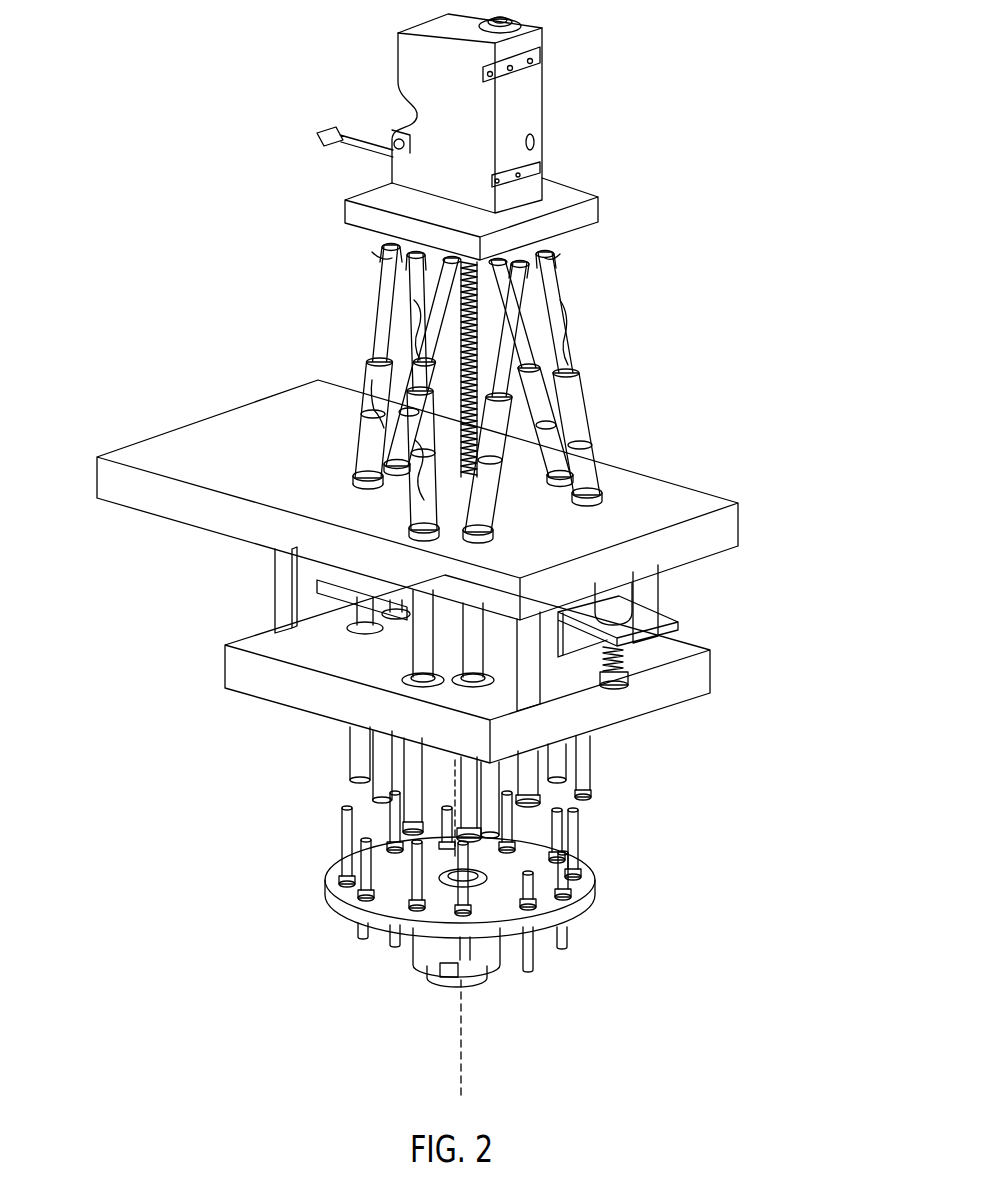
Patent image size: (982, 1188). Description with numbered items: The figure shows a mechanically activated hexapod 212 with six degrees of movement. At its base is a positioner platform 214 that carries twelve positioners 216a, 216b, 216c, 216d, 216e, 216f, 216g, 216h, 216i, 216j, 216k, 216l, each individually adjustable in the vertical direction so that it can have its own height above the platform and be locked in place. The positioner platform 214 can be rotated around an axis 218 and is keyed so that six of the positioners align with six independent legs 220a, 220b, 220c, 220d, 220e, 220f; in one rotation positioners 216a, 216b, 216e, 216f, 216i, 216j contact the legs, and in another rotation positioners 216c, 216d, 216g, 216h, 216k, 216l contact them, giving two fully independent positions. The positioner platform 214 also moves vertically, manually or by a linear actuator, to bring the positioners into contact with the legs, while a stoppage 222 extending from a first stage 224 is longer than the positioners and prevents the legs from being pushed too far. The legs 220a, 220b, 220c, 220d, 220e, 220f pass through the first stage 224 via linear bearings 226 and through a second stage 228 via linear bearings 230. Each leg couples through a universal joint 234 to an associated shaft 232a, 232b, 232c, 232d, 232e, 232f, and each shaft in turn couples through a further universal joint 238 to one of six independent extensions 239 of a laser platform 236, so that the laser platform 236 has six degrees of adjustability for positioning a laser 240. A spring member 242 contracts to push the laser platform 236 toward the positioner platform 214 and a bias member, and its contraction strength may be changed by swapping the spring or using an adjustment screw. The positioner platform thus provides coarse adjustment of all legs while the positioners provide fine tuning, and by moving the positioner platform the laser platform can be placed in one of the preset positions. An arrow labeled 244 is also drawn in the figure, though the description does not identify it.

The mechanically activated hexapod 212 is at (158, 70).
The positioner platform 214 is at (590, 890).
The positioner 216a is at (416, 908).
The positioner 216b is at (468, 905).
The positioner 216c is at (532, 905).
The positioner 216d is at (568, 895).
The positioner 216e is at (578, 860).
The positioner 216f is at (585, 835).
The positioner 216g is at (582, 818).
The positioner 216h is at (445, 820).
The positioner 216i is at (388, 920).
The positioner 216j is at (343, 822).
The positioner 216k is at (343, 842).
The positioner 216l is at (333, 906).
The axis 218 is at (462, 1073).
The leg 220a is at (410, 832).
The leg 220b is at (490, 905).
The leg 220c is at (583, 771).
The leg 220d is at (562, 746).
The leg 220e is at (400, 747).
The leg 220f is at (354, 752).
The stoppage 222 is at (378, 783).
The first stage 224 is at (711, 670).
The linear bearing 226 is at (473, 688).
The second stage 228 is at (745, 525).
The linear bearing 230 is at (362, 482).
The shaft 232a is at (358, 380).
The shaft 232b is at (503, 380).
The shaft 232c is at (572, 377).
The shaft 232d is at (542, 363).
The shaft 232e is at (443, 319).
The shaft 232f is at (373, 370).
The universal joint 234 is at (388, 406).
The laser platform 236 is at (598, 208).
The universal joint 238 is at (386, 252).
The extension 239 is at (382, 250).
The laser 240 is at (540, 92).
The spring member 242 is at (478, 328).
The clamp bracket 244 is at (688, 616).